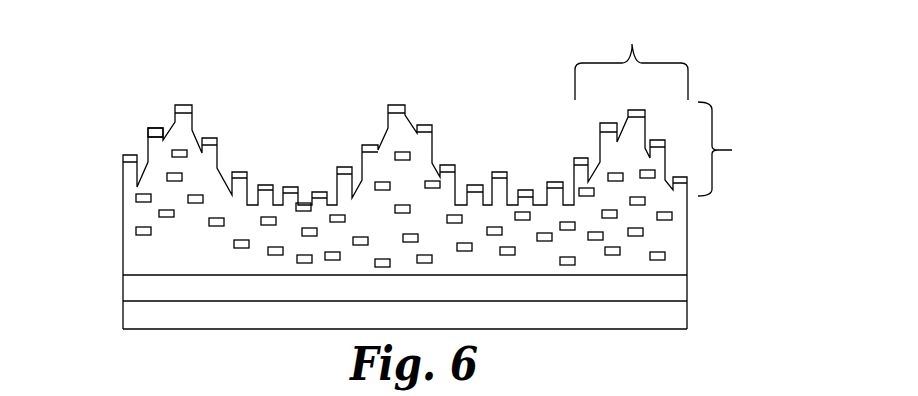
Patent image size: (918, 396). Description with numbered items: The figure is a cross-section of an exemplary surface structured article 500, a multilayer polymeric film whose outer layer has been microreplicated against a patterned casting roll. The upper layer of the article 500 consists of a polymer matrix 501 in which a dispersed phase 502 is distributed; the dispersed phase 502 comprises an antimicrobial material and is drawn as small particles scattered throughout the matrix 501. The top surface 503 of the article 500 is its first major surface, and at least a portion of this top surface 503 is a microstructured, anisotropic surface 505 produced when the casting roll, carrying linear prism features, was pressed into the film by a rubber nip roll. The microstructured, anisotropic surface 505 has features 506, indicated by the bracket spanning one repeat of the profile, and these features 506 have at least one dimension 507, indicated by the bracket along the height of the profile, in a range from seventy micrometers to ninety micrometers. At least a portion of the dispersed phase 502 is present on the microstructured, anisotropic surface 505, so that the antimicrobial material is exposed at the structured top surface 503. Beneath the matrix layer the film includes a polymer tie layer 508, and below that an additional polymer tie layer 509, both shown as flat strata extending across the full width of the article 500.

The surface structured article 500 is at (763, 61).
The polymer matrix 501 is at (171, 259).
The dispersed phase 502 is at (158, 186).
The top surface 503 is at (405, 140).
The microstructured, anisotropic surface 505 is at (130, 130).
The features 506 is at (632, 44).
The dimension 507 is at (739, 149).
The polymer tie layer 508 is at (676, 289).
The additional polymer tie layer 509 is at (676, 316).